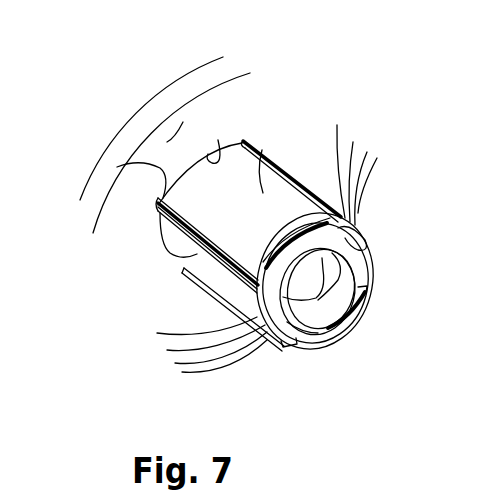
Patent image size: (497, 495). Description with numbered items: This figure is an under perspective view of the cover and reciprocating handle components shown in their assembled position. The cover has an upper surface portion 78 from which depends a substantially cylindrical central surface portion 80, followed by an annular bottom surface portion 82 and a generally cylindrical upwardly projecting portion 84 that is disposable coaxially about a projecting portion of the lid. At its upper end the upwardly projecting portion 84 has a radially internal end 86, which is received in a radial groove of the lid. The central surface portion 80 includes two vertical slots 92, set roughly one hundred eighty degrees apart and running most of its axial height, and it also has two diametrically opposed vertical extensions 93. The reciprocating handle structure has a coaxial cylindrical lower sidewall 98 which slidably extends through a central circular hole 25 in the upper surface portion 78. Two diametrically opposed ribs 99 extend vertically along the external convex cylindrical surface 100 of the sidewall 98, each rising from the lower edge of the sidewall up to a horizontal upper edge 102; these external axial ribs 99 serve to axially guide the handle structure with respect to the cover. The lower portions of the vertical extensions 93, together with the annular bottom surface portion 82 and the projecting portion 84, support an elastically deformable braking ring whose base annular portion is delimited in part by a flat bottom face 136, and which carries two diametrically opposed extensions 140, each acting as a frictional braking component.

The central circular hole 25 is at (218, 140).
The cylindrical lower sidewall 98 is at (200, 175).
The upper surface portion 78 is at (167, 142).
The horizontal upper edge 102 is at (117, 167).
The vertical slots 92 is at (246, 138).
The external convex cylindrical surface 100 is at (287, 200).
The extensions 140 is at (288, 164).
The flat bottom face 136 is at (358, 248).
The upwardly projecting portion 84 is at (340, 270).
The radially internal end 86 is at (307, 313).
The annular bottom surface portion 82 is at (263, 347).
The central surface portion 80 is at (204, 296).
The ribs 99 is at (165, 221).
The vertical extensions 93 is at (178, 258).